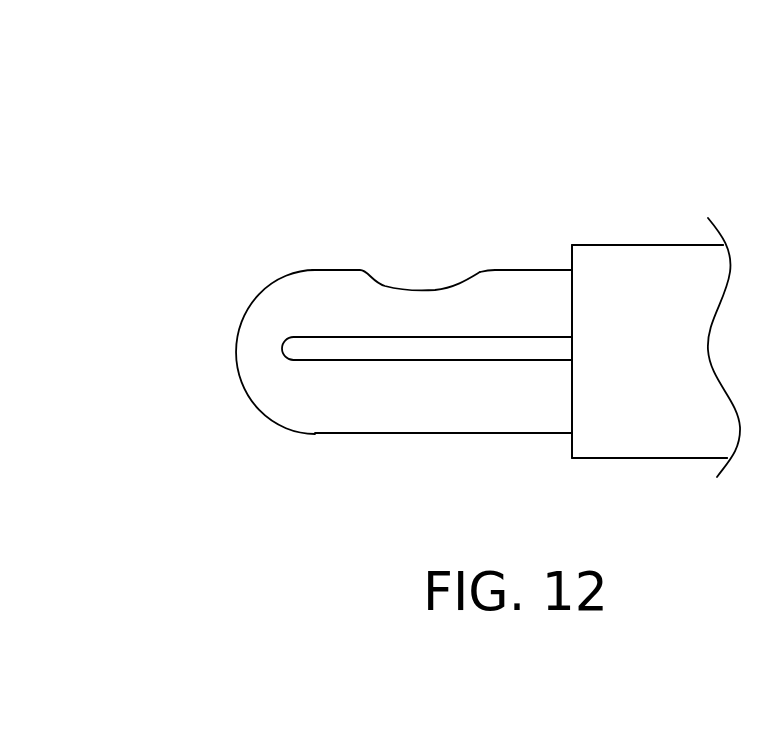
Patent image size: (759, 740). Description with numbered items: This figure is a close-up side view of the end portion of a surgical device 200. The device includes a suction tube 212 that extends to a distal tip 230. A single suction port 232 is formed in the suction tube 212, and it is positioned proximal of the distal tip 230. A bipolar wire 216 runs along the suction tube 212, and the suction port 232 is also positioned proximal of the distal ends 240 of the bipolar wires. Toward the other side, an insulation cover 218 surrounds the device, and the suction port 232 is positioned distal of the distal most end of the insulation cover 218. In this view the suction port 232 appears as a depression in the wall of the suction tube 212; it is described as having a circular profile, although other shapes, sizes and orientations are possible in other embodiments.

The surgical device 200 is at (678, 172).
The suction tube 212 is at (539, 268).
The bipolar wire 216 is at (367, 362).
The insulation cover 218 is at (643, 460).
The distal tip 230 is at (238, 328).
The suction port 232 is at (413, 282).
The distal ends 240 is at (296, 348).